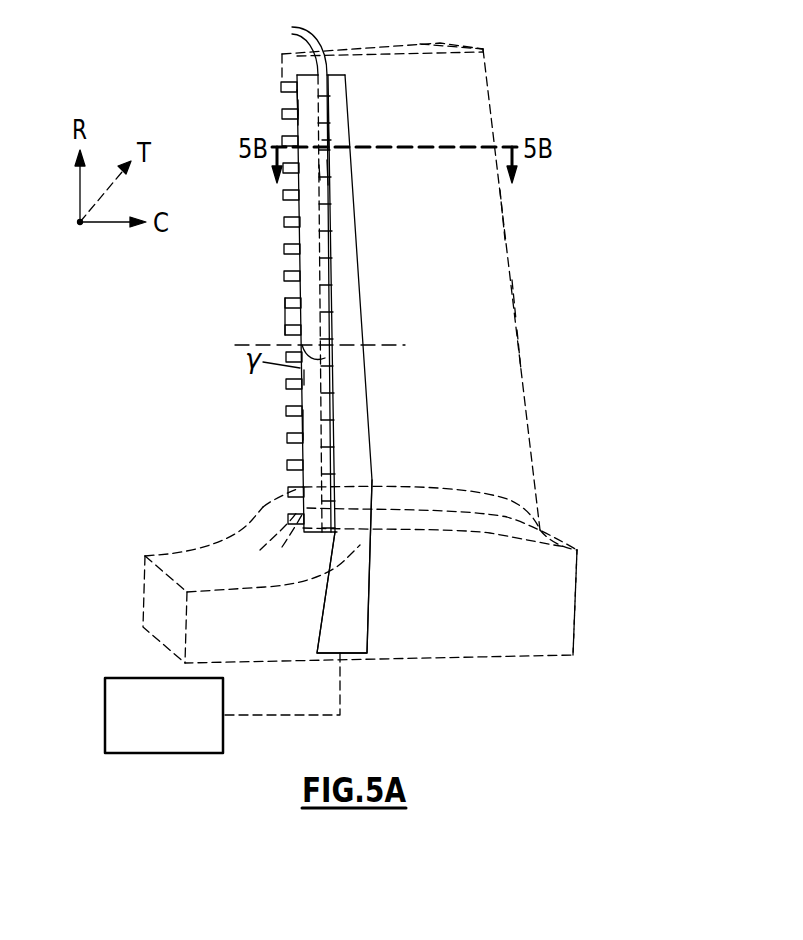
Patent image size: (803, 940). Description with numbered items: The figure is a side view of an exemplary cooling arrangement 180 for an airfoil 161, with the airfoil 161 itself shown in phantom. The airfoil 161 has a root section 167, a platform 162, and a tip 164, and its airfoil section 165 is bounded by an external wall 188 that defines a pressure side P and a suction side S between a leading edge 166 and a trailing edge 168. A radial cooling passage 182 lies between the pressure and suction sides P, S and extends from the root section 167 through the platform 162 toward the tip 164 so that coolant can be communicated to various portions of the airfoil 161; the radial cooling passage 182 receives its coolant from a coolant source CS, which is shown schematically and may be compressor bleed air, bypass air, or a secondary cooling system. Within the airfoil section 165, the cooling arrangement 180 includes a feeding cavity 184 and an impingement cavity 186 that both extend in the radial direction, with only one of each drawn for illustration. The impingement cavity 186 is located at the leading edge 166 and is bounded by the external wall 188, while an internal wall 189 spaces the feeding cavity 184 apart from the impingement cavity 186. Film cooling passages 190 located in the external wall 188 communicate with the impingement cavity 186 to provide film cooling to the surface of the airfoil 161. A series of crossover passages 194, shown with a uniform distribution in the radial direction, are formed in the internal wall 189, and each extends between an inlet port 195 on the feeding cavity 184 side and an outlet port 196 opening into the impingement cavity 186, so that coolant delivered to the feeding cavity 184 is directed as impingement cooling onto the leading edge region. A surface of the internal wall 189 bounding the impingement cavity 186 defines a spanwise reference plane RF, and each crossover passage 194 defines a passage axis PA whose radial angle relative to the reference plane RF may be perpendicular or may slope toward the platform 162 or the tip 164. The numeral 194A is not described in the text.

The airfoil 161 is at (200, 63).
The platform 162 is at (173, 580).
The tip 164 is at (443, 50).
The airfoil section 165 is at (282, 292).
The leading edge 166 is at (290, 222).
The root section 167 is at (563, 578).
The trailing edge 168 is at (505, 228).
The cooling arrangement 180 is at (372, 62).
The radial cooling passage 182 is at (371, 608).
The feeding cavity 184 is at (346, 156).
The impingement cavity 186 is at (297, 111).
The external wall 188 is at (291, 102).
The internal wall 189 is at (328, 138).
The film cooling passage 190 is at (296, 430).
The crossover passage 194 is at (293, 29).
The cooling passage inlet 194A is at (326, 146).
The inlet port 195 is at (330, 170).
The outlet port 196 is at (325, 172).
The suction side S is at (517, 305).
The pressure side P is at (503, 363).
The passage axis PA is at (250, 345).
The reference plane RF is at (322, 377).
The coolant source CS is at (105, 712).